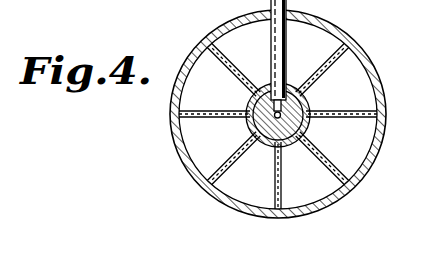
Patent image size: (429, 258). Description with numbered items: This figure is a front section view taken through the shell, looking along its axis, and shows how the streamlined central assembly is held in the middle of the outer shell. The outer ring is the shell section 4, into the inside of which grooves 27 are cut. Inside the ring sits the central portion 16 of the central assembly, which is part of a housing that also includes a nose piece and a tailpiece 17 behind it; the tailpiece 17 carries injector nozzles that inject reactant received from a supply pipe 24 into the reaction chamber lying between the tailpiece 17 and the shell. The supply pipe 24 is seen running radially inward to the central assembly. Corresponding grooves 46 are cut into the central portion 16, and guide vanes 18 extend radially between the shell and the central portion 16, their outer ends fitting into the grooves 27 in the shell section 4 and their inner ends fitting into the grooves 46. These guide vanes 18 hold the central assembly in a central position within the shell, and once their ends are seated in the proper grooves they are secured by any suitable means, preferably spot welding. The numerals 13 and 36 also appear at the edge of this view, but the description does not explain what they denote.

The shell section 4 is at (378, 152).
The grooves 27 is at (380, 137).
The central portion 16 is at (258, 143).
The guide vanes 18 is at (344, 180).
The grooves 46 is at (241, 122).
The supply pipe 24 is at (287, 48).
The tailpiece 17 is at (26, 0).
The frame 13 is at (334, 4).
The bracket 36 is at (404, 4).